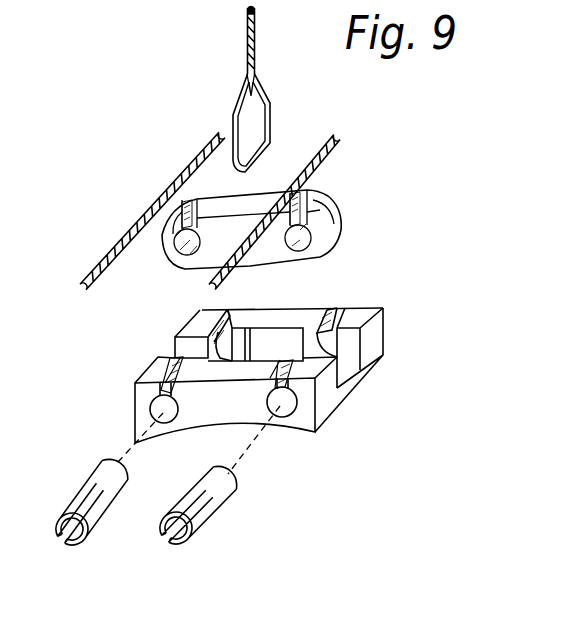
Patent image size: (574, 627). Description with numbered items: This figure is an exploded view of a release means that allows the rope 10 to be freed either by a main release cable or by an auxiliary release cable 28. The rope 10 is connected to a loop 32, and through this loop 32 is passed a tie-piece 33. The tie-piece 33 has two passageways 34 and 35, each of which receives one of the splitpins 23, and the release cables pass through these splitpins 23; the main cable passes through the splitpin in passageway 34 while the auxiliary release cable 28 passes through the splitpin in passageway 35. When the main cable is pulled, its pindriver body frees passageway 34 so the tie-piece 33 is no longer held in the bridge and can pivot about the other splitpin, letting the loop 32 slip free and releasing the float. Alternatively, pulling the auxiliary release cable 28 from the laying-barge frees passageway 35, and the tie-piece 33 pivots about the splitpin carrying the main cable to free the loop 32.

The rope 10 is at (247, 31).
The loop 32 is at (272, 128).
The tie-piece 33 is at (267, 193).
The passageway 34 is at (178, 247).
The passageway 35 is at (321, 198).
The auxiliary release cable 28 is at (320, 168).
The splitpins 23 is at (215, 512).